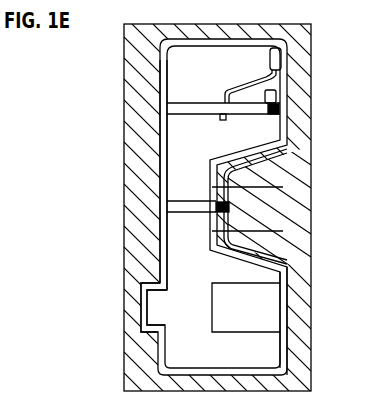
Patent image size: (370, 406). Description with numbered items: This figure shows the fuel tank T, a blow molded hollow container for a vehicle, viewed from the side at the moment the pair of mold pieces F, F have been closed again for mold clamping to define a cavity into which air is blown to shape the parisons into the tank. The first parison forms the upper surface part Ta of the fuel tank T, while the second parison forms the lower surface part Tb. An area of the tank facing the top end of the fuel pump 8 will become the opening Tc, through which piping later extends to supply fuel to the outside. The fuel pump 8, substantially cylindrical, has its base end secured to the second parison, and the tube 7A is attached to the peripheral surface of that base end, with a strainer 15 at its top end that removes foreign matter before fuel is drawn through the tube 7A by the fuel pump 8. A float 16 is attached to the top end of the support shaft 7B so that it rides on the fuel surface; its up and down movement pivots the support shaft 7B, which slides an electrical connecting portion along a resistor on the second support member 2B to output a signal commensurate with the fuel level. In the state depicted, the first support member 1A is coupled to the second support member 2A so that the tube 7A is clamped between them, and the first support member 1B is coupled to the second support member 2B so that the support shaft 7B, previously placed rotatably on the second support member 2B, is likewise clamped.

The fuel tank T is at (158, 67).
The upper surface part Ta is at (164, 146).
The lower surface part Tb is at (284, 282).
The opening Tc is at (143, 298).
The mold piece F is at (150, 225).
The first support member 1A is at (175, 206).
The first support member 1B is at (175, 113).
The second support member 2A is at (230, 213).
The second support member 2B is at (279, 114).
The tube 7A is at (283, 187).
The support shaft 7B is at (223, 98).
The fuel pump 8 is at (216, 310).
The strainer 15 is at (276, 96).
The float 16 is at (281, 59).